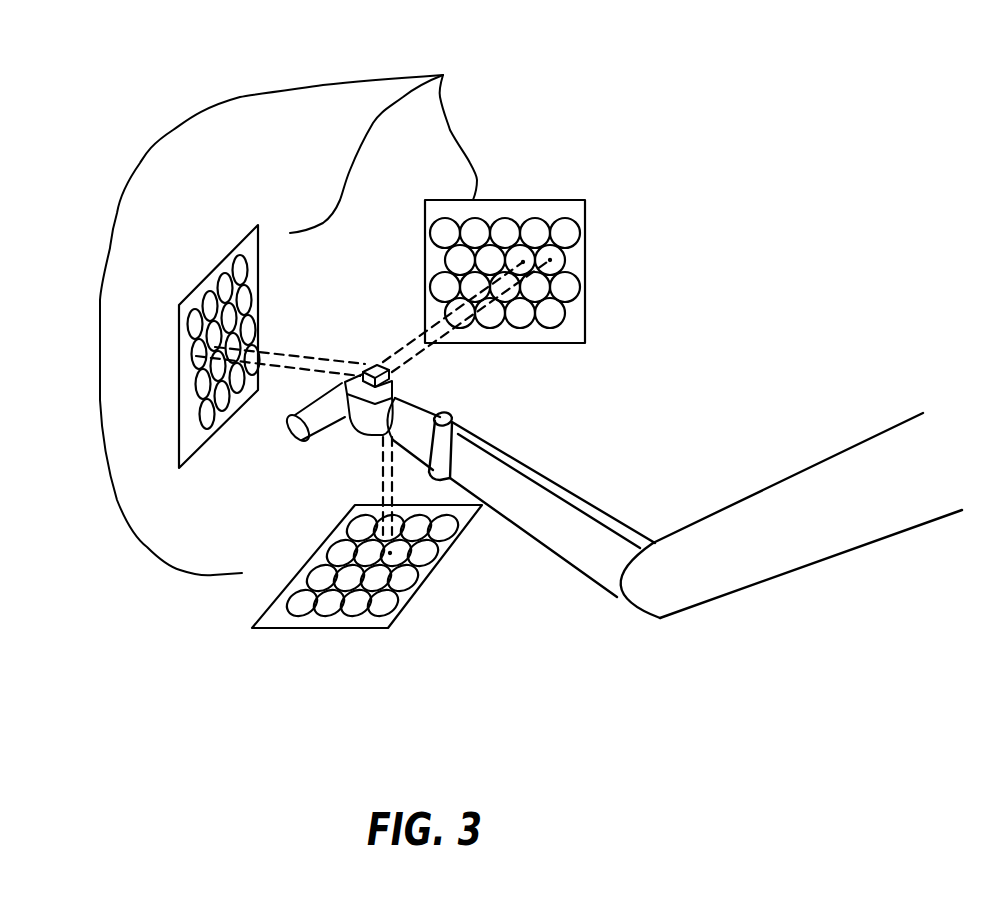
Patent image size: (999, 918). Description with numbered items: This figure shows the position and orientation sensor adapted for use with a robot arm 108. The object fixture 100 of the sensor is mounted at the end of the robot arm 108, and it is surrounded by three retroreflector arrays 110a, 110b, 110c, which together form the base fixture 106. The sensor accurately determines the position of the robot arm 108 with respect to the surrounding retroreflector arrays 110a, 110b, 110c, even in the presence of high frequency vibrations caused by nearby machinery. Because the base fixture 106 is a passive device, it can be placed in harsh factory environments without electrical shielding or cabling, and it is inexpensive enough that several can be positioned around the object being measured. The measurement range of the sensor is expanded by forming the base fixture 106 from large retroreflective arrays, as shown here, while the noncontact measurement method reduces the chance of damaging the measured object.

The object fixture 100 is at (392, 369).
The base fixture 106 is at (288, 303).
The robot arm 108 is at (777, 480).
The retroreflector array 110a is at (277, 620).
The retroreflector array 110b is at (565, 198).
The retroreflector array 110c is at (238, 246).